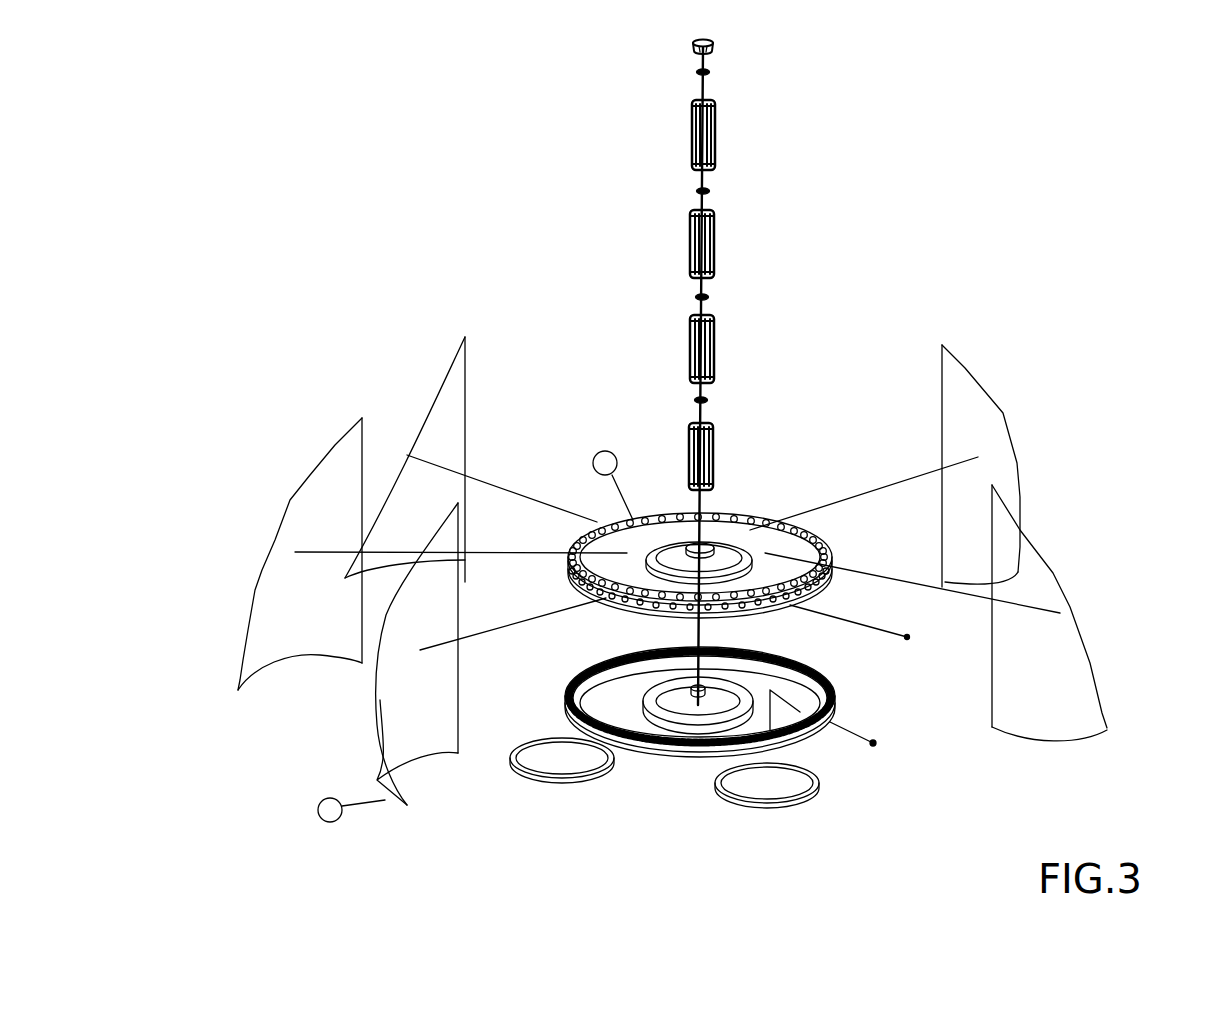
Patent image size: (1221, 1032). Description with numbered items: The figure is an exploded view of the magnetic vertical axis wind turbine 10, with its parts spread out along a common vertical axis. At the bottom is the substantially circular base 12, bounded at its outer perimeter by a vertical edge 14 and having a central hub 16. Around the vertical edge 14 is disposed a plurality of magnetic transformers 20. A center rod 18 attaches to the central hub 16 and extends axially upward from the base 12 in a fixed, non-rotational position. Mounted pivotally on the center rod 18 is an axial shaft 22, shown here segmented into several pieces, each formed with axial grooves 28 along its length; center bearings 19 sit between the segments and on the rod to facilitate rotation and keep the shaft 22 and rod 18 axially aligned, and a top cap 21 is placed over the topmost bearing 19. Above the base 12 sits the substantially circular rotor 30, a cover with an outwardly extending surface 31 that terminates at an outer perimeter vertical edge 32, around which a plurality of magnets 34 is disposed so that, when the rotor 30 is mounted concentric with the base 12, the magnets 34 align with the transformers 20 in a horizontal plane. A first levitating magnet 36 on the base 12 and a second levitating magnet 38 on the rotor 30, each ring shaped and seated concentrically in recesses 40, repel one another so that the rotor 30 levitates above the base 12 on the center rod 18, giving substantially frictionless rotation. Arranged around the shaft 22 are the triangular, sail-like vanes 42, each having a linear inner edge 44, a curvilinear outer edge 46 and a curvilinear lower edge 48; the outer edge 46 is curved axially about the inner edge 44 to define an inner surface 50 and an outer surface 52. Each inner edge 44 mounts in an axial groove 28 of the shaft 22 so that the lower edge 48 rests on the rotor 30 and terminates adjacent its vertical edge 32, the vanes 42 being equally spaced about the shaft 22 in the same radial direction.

The magnetic vertical axis wind turbine 10 is at (363, 261).
The base 12 is at (693, 751).
The vertical edge 14 is at (800, 745).
The central hub 16 is at (580, 670).
The center rod 18 is at (701, 632).
The center bearing 19 is at (711, 72).
The magnetic transformer 20 is at (873, 743).
The top cap 21 is at (714, 44).
The axial shaft 22 is at (716, 142).
The axial groove 28 is at (718, 243).
The rotor 30 is at (731, 524).
The outwardly extending surface 31 is at (658, 520).
The outer perimeter vertical edge 32 is at (763, 557).
The magnet 34 is at (907, 637).
The first levitating magnet 36 is at (783, 805).
The second levitating magnet 38 is at (545, 782).
The recess 40 is at (778, 525).
The vane 42 is at (669, 561).
The inner edge 44 is at (365, 457).
The outer edge 46 is at (458, 375).
The lower edge 48 is at (268, 668).
The inner surface 50 is at (460, 448).
The outer surface 52 is at (380, 780).